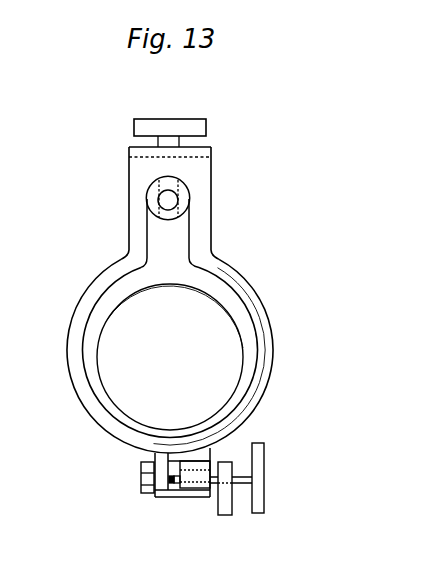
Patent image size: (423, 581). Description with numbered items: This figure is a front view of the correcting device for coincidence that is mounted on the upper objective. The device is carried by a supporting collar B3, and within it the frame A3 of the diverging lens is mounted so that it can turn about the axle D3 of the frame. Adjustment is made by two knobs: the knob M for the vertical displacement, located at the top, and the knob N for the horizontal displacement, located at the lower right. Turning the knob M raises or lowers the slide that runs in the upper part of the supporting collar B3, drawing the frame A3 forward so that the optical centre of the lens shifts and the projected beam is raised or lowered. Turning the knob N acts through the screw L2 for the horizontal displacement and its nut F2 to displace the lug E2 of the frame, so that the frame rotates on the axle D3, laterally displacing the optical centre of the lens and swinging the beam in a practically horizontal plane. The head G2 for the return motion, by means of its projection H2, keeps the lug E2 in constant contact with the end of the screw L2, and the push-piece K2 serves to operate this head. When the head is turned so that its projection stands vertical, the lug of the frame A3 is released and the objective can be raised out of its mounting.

The knob for the vertical displacement M is at (192, 129).
The collar supporting the corrector B3 is at (198, 175).
The axle of the frame D3 is at (173, 201).
The frame of the diverging lens A3 is at (178, 243).
The nut for horizontal displacement F2 is at (193, 466).
The push-piece for the head K2 is at (228, 466).
The screw for the horizontal displacement L2 is at (241, 476).
The knob for the horizontal displacement N is at (258, 492).
The lug of the frame E2 is at (156, 466).
The projection on the head H2 is at (145, 478).
The head for the return motion G2 is at (149, 489).